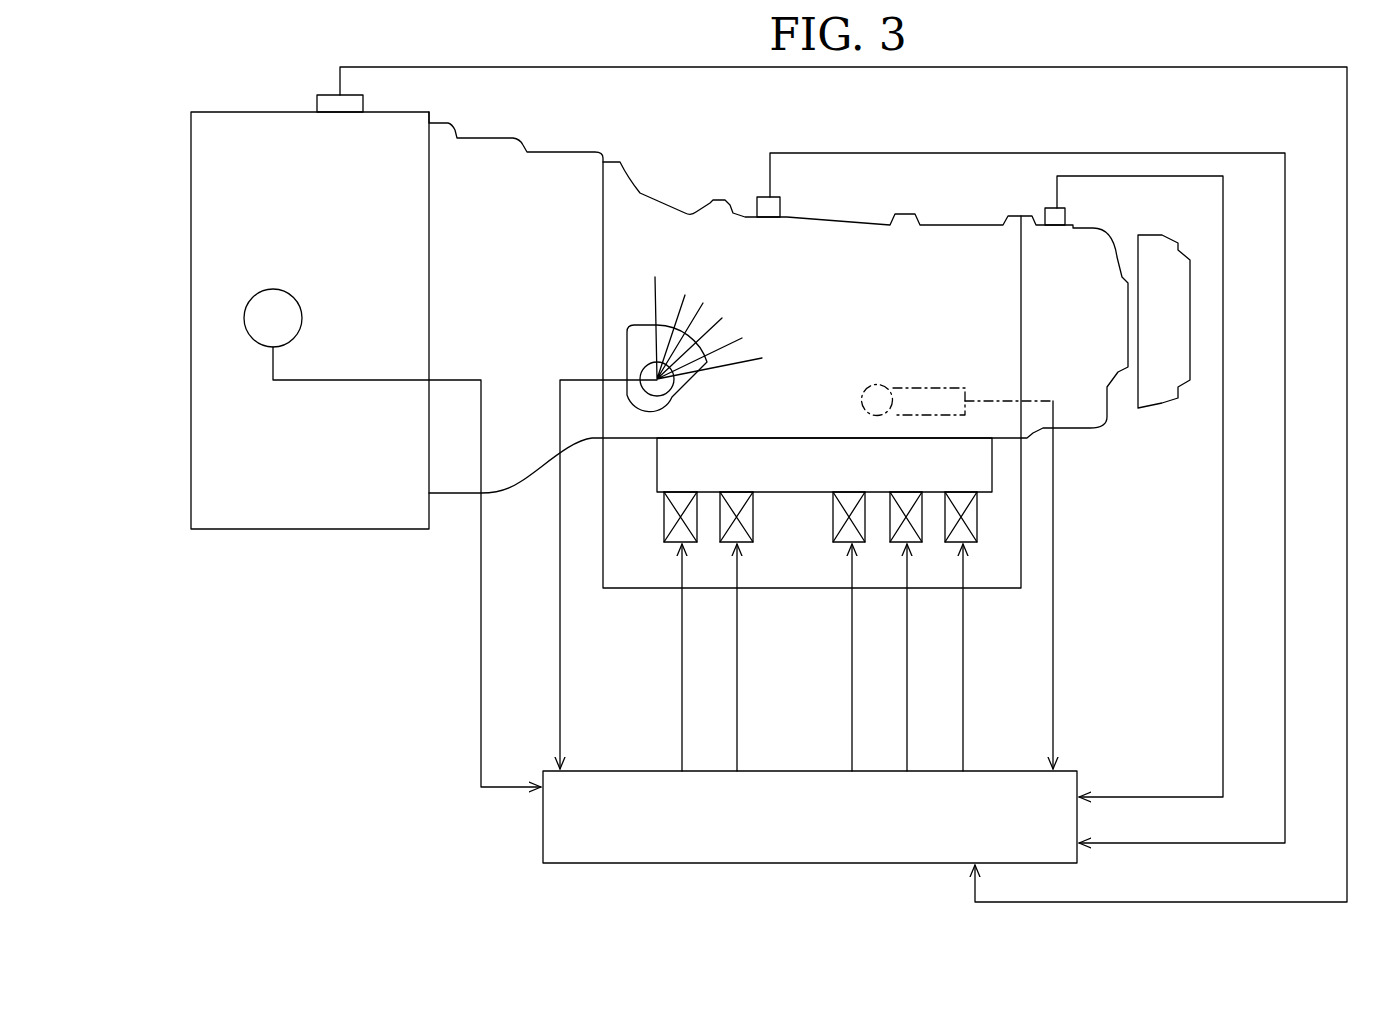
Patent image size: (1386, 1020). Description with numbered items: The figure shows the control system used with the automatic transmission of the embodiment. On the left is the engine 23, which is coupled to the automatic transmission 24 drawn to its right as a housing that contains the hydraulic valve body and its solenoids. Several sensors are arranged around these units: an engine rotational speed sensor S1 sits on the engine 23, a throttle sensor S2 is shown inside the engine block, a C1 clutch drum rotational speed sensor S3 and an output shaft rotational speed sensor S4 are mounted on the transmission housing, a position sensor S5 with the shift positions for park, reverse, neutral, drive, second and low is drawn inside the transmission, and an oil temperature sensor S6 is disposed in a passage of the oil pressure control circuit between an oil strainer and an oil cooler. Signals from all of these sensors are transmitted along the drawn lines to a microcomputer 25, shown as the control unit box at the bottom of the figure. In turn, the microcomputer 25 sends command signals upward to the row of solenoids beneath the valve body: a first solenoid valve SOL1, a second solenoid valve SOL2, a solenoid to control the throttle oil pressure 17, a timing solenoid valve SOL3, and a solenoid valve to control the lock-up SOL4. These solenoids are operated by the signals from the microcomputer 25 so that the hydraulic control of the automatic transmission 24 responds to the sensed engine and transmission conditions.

The engine 23 is at (309, 534).
The automatic transmission 24 is at (677, 198).
The solenoid to control the throttle oil pressure 17 is at (838, 545).
The microcomputer 25 is at (783, 863).
The engine rotational speed sensor S1 is at (363, 101).
The throttle sensor S2 is at (302, 318).
The C1 clutch drum rotational speed sensor S3 is at (785, 212).
The output shaft rotational speed sensor S4 is at (1067, 215).
The position sensor S5 is at (683, 397).
The oil temperature sensor S6 is at (905, 388).
The first solenoid valve SOL1 is at (664, 520).
The second solenoid valve SOL2 is at (742, 545).
The timing solenoid valve SOL3 is at (895, 545).
The solenoid valve to control the lock-up SOL4 is at (975, 545).